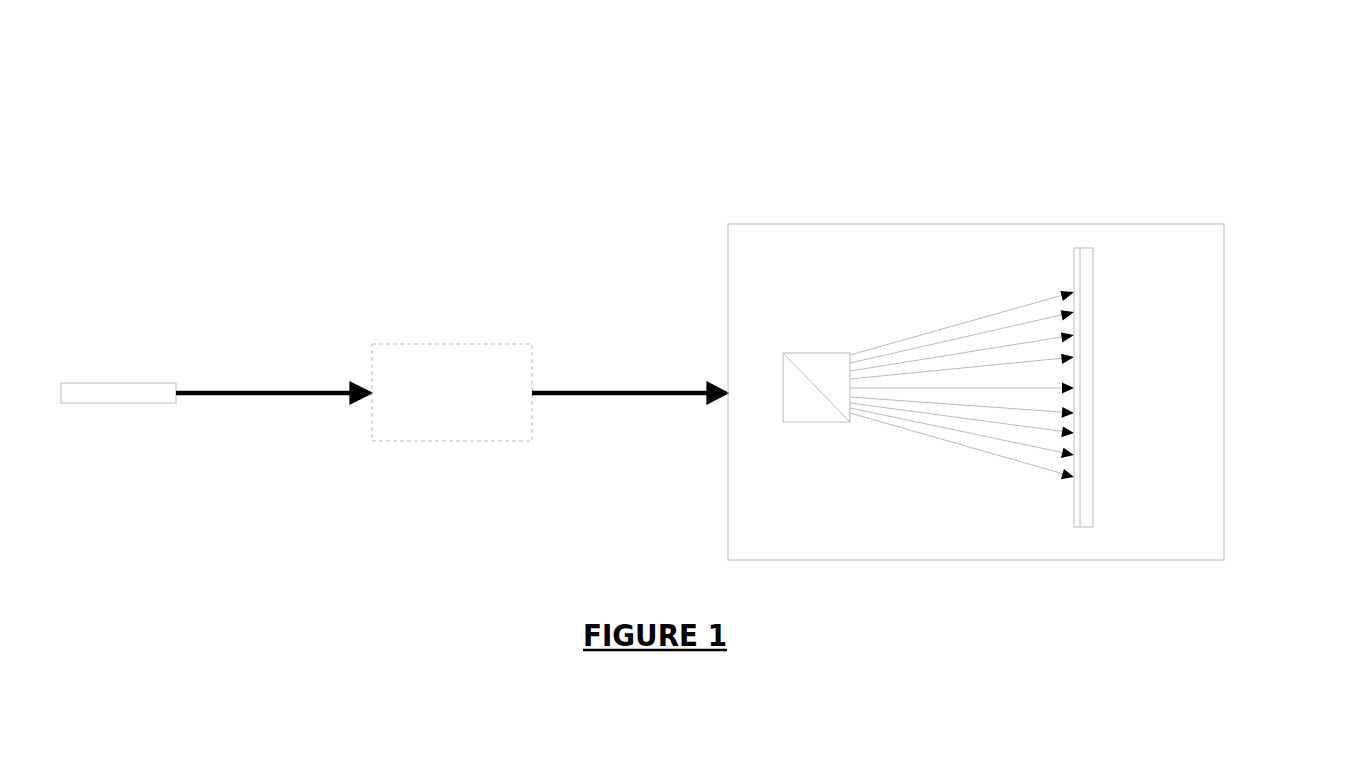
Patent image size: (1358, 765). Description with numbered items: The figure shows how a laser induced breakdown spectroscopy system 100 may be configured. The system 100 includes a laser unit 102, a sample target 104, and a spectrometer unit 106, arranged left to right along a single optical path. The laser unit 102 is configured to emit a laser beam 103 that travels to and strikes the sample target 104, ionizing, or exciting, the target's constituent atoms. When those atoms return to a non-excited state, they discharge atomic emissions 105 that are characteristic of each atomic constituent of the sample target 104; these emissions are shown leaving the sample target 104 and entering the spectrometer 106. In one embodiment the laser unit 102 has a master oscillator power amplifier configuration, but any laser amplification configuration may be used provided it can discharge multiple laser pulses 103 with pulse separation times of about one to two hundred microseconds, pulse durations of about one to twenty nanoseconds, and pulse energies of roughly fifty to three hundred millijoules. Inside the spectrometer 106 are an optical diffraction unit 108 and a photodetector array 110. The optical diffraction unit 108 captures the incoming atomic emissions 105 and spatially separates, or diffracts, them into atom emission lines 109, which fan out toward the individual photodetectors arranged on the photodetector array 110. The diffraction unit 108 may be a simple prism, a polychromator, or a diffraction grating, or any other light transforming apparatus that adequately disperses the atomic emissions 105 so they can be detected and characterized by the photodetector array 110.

The system 100 is at (583, 125).
The laser unit 102 is at (108, 375).
The laser beam 103 is at (263, 355).
The sample target 104 is at (455, 342).
The atomic emissions 105 is at (635, 357).
The spectrometer unit 106 is at (988, 602).
The optical diffraction unit 108 is at (828, 345).
The atom emission lines 109 is at (965, 318).
The photodetector array 110 is at (1104, 357).